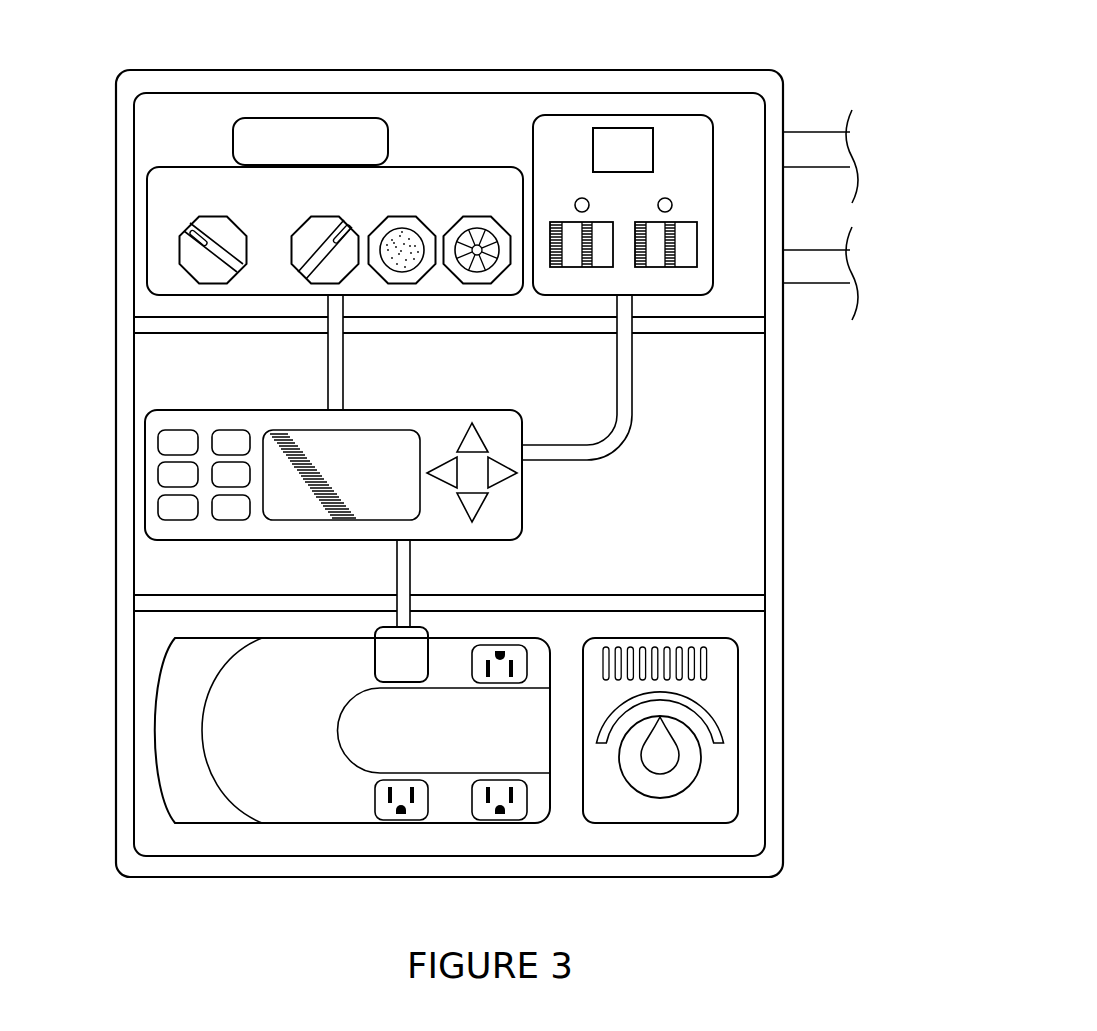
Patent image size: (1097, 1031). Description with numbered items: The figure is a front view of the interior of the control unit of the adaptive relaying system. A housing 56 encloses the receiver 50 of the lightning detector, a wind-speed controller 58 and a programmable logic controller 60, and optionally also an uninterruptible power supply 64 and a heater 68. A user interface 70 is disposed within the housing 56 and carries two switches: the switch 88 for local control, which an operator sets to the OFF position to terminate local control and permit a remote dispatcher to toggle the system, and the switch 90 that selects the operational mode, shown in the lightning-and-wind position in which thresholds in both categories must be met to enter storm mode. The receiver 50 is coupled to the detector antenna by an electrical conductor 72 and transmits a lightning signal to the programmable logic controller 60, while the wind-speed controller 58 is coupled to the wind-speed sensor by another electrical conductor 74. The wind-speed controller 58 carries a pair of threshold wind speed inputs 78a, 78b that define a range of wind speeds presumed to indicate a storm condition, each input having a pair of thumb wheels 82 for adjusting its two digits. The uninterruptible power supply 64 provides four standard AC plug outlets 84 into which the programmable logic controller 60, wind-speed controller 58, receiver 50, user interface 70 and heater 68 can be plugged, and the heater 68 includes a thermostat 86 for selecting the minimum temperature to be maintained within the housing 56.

The receiver 50 is at (307, 140).
The housing 56 is at (682, 82).
The wind-speed controller 58 is at (619, 151).
The programmable logic controller 60 is at (160, 538).
The uninterruptible power supply 64 is at (352, 778).
The heater 68 is at (709, 786).
The user interface 70 is at (289, 273).
The electrical conductor 72 is at (807, 150).
The electrical conductor 74 is at (815, 270).
The threshold wind speed input 78a is at (565, 213).
The threshold wind speed input 78b is at (700, 211).
The thumb wheels 82 is at (670, 220).
The AC plug outlets 84 is at (392, 810).
The thermostat 86 is at (665, 756).
The switch 88 is at (320, 284).
The switch 90 is at (181, 250).